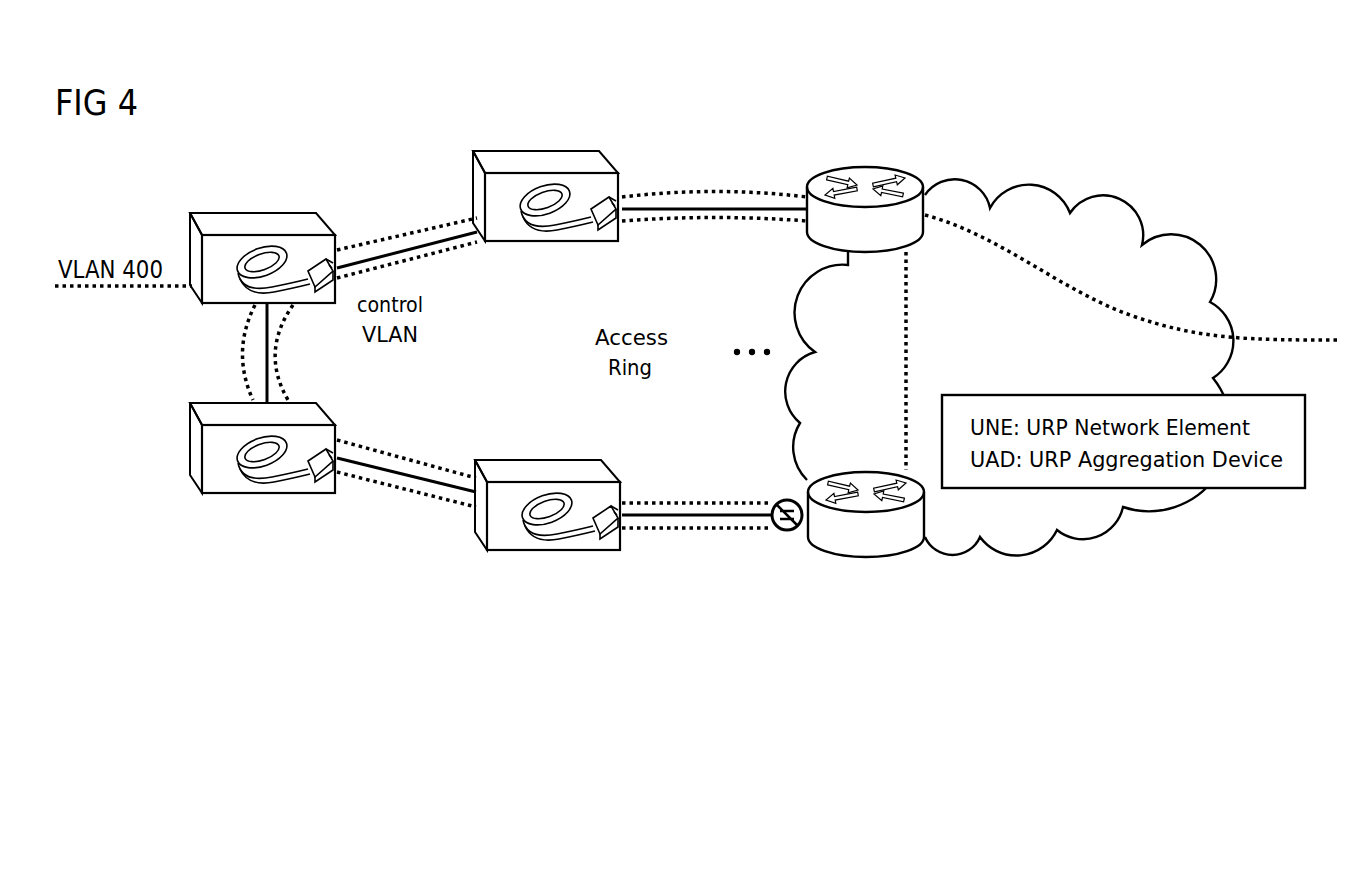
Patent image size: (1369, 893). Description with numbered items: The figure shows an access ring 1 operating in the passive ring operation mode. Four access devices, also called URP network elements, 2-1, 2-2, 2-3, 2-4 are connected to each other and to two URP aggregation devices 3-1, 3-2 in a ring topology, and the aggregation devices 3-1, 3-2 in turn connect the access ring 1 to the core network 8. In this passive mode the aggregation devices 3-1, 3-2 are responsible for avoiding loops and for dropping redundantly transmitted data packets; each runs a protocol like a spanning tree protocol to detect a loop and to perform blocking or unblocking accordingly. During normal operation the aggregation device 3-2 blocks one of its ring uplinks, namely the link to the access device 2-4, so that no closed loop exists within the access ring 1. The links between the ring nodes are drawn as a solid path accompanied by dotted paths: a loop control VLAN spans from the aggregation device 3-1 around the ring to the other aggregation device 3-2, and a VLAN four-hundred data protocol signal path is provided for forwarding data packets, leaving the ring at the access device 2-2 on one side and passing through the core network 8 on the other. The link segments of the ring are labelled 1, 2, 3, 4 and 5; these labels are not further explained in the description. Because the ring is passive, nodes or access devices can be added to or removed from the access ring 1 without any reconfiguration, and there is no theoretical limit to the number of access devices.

The access ring 1 is at (753, 103).
The link between UNE (B) and UNE (A) (control VLAN) 2 is at (407, 252).
The link between UNE (B) and UNE (C) 3 is at (272, 353).
The link between UNE (C) and UNE (D) 4 is at (406, 467).
The link between UNE (D) and UAD (blocking) 5 is at (712, 523).
The core network 8 is at (1110, 207).
The access device 2-1 is at (475, 186).
The access device 2-2 is at (190, 240).
The access device 2-3 is at (190, 432).
The access device 2-4 is at (538, 459).
The URP aggregation device 3-1 is at (818, 178).
The URP aggregation device 3-2 is at (907, 552).